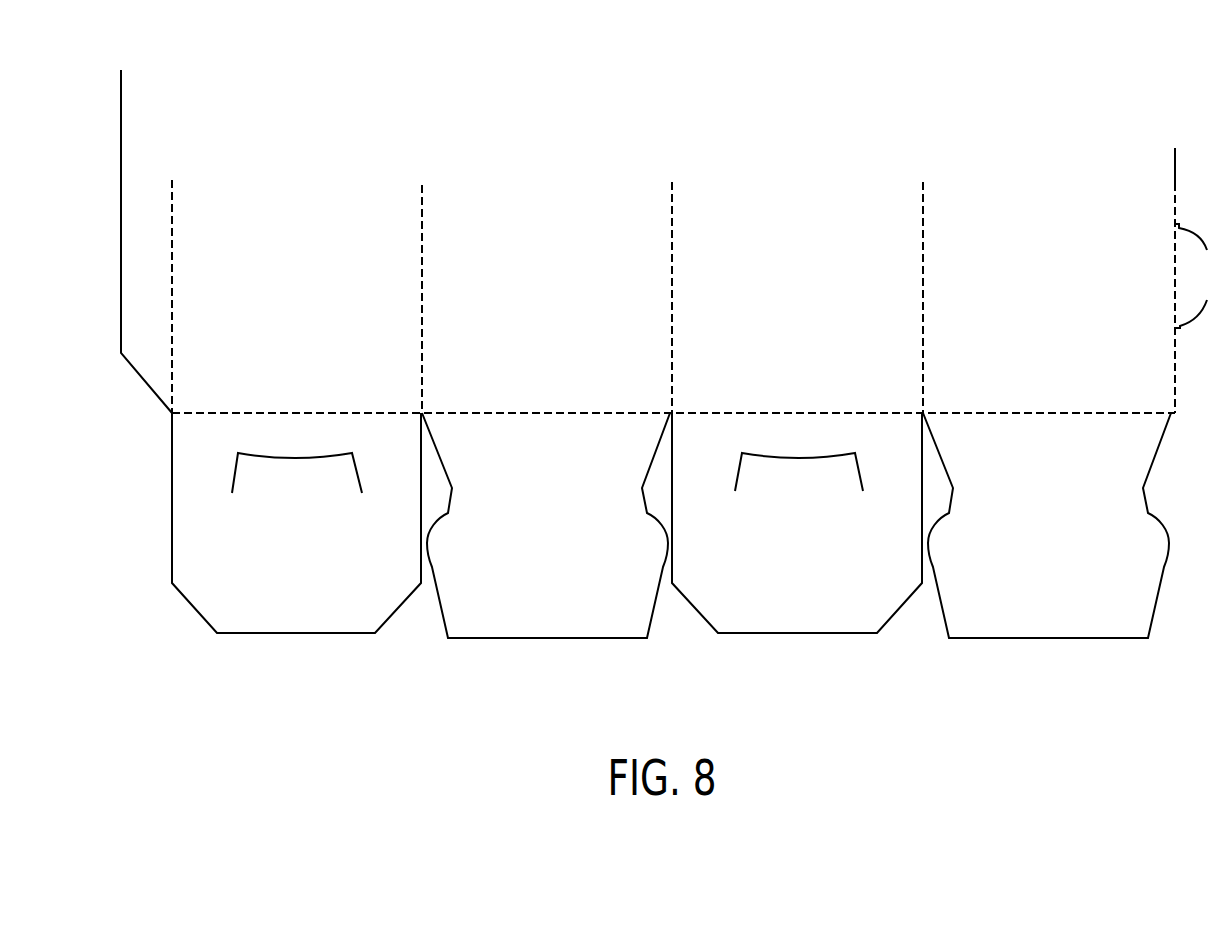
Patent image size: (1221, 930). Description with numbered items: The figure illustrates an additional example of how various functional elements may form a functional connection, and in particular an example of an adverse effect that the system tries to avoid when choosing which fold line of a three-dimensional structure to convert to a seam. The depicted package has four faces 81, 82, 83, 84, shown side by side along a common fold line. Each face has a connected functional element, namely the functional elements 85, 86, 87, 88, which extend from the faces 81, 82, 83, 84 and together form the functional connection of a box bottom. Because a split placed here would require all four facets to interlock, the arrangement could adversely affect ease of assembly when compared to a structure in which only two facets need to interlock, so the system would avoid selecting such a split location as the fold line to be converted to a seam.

The face 81 is at (315, 245).
The face 82 is at (568, 264).
The face 83 is at (775, 244).
The face 84 is at (1009, 252).
The functional element 85 is at (292, 617).
The functional element 86 is at (555, 628).
The functional element 87 is at (798, 624).
The functional element 88 is at (1067, 624).